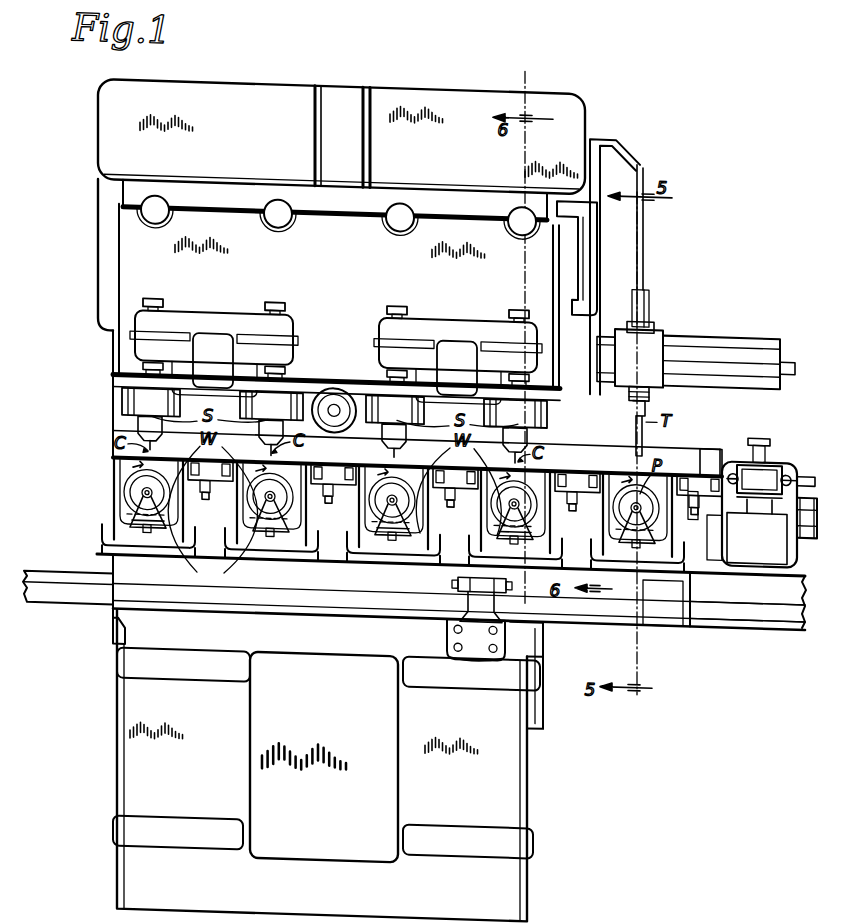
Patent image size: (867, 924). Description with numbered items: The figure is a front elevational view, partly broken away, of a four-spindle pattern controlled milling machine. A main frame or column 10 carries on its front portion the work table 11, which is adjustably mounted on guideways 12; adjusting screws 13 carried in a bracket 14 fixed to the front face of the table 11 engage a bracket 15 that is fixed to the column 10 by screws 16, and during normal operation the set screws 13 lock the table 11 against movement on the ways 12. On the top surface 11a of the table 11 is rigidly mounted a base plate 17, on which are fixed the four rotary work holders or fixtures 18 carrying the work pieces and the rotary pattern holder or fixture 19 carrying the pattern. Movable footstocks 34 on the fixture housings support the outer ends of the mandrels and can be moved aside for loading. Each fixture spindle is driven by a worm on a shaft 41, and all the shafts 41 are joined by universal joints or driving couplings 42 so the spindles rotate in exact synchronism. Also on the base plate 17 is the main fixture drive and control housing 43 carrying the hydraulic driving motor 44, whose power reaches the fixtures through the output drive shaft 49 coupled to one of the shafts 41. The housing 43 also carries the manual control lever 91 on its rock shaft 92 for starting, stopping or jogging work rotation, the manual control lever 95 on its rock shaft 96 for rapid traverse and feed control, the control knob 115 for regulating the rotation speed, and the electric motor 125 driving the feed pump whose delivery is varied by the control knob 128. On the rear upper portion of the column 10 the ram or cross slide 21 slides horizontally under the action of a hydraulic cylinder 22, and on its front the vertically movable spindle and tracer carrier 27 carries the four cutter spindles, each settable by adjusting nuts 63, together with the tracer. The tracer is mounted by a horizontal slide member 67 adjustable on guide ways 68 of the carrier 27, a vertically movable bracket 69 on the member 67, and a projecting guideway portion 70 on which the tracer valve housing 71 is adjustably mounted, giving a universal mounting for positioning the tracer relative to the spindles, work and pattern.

The main frame or column 10 is at (527, 792).
The work table 11 is at (300, 569).
The top surface of the table 11a is at (662, 603).
The guideways 12 is at (526, 675).
The adjusting screws 13 is at (462, 585).
The bracket 14 is at (455, 573).
The bracket 15 is at (468, 609).
The screws 16 is at (462, 643).
The base plate 17 is at (738, 566).
The rotary work holders or fixtures 18 is at (255, 513).
The rotary pattern holder or fixture 19 is at (630, 514).
The ram or cross slide 21 is at (248, 84).
The hydraulic cylinder 22 is at (334, 394).
The spindle and tracer carrier 27 is at (336, 326).
The footstocks 34 is at (632, 530).
The shafts 41 is at (210, 456).
The universal joints or driving couplings 42 is at (696, 494).
The main fixture drive and control housing 43 is at (778, 446).
The hydraulic driving motor 44 is at (414, 591).
The output drive shaft 49 is at (686, 480).
The adjusting nuts 63 is at (268, 297).
The horizontal slide member 67 is at (588, 174).
The guide ways 68 is at (578, 215).
The vertically movable bracket 69 is at (636, 151).
The projecting guideway portion 70 is at (702, 333).
The tracer valve housing 71 is at (639, 372).
The manual control lever 91 is at (810, 499).
The rock shaft 92 is at (790, 451).
The manual control lever 95 is at (709, 505).
The rock shaft 96 is at (731, 451).
The control knob 115 is at (756, 421).
The electric motor 125 is at (759, 489).
The control knob 128 is at (759, 514).